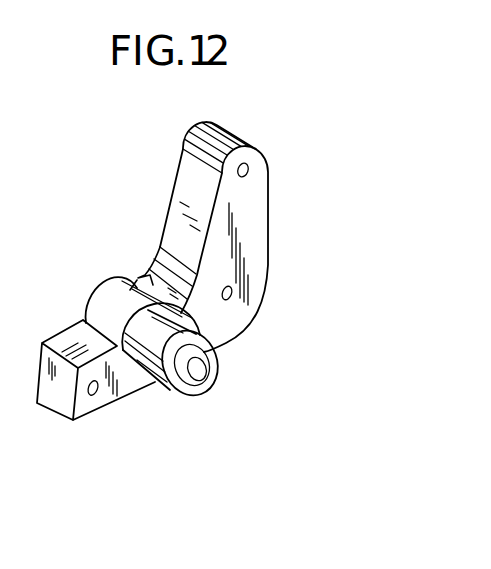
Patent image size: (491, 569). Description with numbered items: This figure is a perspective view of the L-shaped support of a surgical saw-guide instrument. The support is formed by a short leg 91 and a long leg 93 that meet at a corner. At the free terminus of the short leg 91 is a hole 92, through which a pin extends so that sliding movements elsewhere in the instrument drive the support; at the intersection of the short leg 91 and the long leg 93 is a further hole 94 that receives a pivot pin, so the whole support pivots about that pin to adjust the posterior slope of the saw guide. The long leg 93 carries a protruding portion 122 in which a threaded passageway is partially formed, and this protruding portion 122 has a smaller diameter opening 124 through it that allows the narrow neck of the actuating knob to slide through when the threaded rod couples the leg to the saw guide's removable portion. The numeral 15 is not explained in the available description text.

The mounting block 15 is at (94, 458).
The short leg 91 is at (311, 229).
The hole 92 is at (311, 162).
The long leg 93 is at (266, 380).
The further hole 94 is at (288, 338).
The protruding portion 122 is at (170, 422).
The smaller diameter opening 124 is at (244, 414).